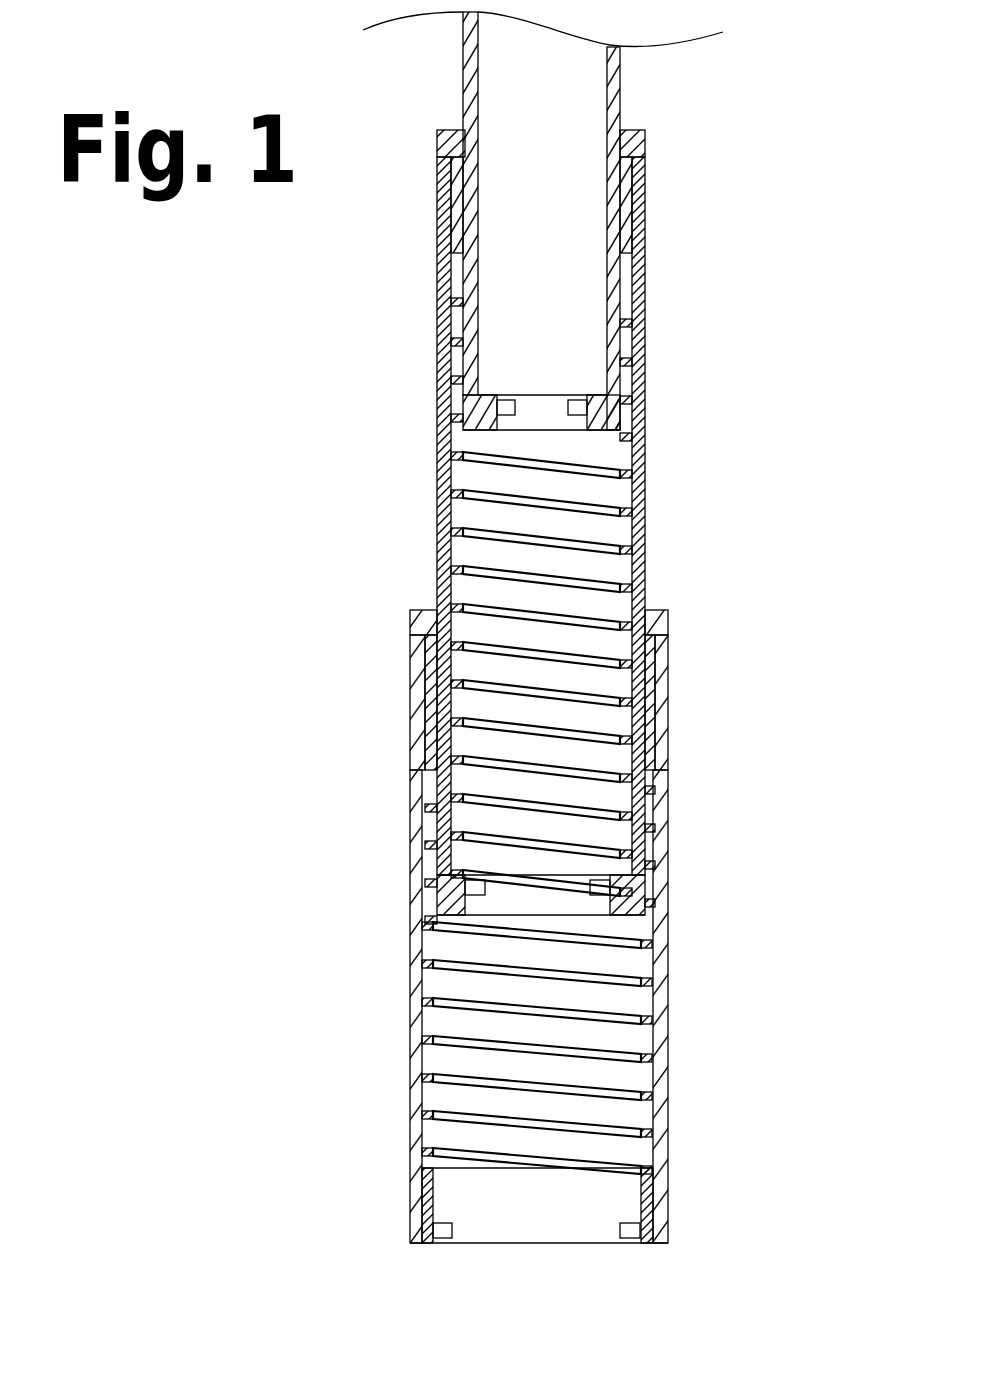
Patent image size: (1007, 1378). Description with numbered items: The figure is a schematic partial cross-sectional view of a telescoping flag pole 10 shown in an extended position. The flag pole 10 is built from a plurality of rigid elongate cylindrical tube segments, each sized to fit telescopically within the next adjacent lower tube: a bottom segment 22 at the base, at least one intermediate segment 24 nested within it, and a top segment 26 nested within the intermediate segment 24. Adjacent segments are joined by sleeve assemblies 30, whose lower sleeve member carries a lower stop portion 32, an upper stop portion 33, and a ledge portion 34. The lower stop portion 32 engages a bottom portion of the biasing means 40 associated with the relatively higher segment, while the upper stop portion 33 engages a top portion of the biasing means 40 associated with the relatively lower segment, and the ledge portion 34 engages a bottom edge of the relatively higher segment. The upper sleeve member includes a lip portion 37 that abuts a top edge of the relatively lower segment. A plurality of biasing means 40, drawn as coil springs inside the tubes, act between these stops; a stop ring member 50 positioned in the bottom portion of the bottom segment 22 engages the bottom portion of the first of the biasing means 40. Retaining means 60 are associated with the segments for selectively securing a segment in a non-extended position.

The flag pole 10 is at (340, 857).
The bottom segment 22 is at (668, 1012).
The intermediate segment 24 is at (646, 430).
The top segment 26 is at (621, 76).
The sleeve assembly 30 is at (423, 736).
The lower stop portion 32 is at (592, 396).
The upper stop portion 33 is at (627, 301).
The ledge portion 34 is at (494, 277).
The lip portion 37 is at (644, 142).
The biasing means 40 is at (588, 498).
The stop ring member 50 is at (433, 1195).
The retaining means 60 is at (512, 393).